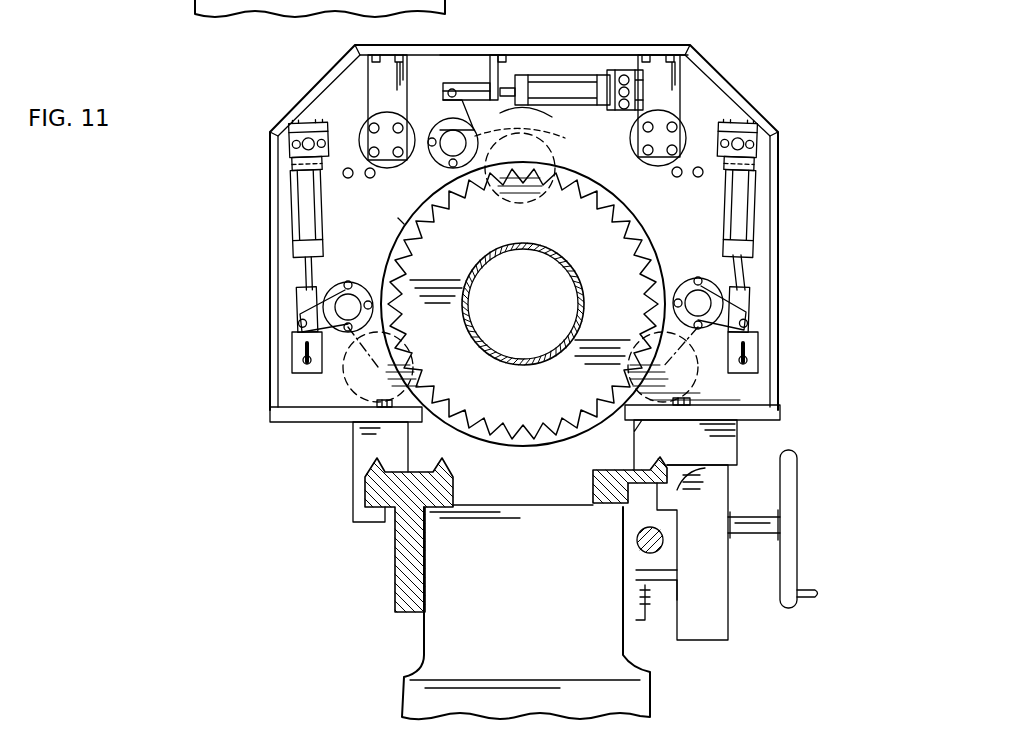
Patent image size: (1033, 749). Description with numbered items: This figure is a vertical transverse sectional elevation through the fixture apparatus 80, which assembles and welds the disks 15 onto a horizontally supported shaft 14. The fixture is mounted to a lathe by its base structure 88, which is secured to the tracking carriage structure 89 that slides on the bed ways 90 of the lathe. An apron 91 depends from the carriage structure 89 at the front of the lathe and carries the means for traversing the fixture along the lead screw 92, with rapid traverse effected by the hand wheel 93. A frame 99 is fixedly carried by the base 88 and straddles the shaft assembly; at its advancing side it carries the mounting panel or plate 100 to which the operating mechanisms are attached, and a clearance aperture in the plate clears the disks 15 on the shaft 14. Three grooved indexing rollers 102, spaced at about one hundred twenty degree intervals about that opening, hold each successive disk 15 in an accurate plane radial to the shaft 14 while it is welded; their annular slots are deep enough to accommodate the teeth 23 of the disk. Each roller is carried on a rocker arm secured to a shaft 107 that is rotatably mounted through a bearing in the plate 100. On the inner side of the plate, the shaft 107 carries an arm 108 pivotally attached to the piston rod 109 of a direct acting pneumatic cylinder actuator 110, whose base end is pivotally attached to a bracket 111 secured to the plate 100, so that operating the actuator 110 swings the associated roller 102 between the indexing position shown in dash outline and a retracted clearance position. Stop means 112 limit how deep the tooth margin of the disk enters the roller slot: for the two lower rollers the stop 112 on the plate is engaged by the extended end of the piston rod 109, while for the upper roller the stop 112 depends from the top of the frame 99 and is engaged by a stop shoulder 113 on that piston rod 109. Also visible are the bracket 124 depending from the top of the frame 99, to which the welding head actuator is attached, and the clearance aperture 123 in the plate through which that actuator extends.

The fixture apparatus 80 is at (275, 93).
The frame 99 is at (308, 105).
The base structure 88 is at (320, 424).
The tracking carriage structure 89 is at (353, 462).
The bed ways 90 is at (545, 474).
The apron 91 is at (722, 622).
The lead screw 92 is at (628, 550).
The hand wheel 93 is at (796, 537).
The disks 15 is at (614, 287).
The shaft 14 is at (472, 270).
The teeth 23 is at (398, 222).
The grooved indexing rollers 102 is at (560, 150).
The stop shoulder 113 is at (552, 117).
The bracket 124 is at (362, 52).
The clearance aperture 123 is at (362, 142).
The shaft 107 is at (448, 155).
The arm 108 is at (443, 108).
The stop means 112 is at (490, 65).
The piston rod 109 is at (505, 88).
The direct acting pneumatic cylinder actuator 110 is at (568, 82).
The bracket 111 is at (624, 72).
The mounting panel or plate 100 is at (450, 55).